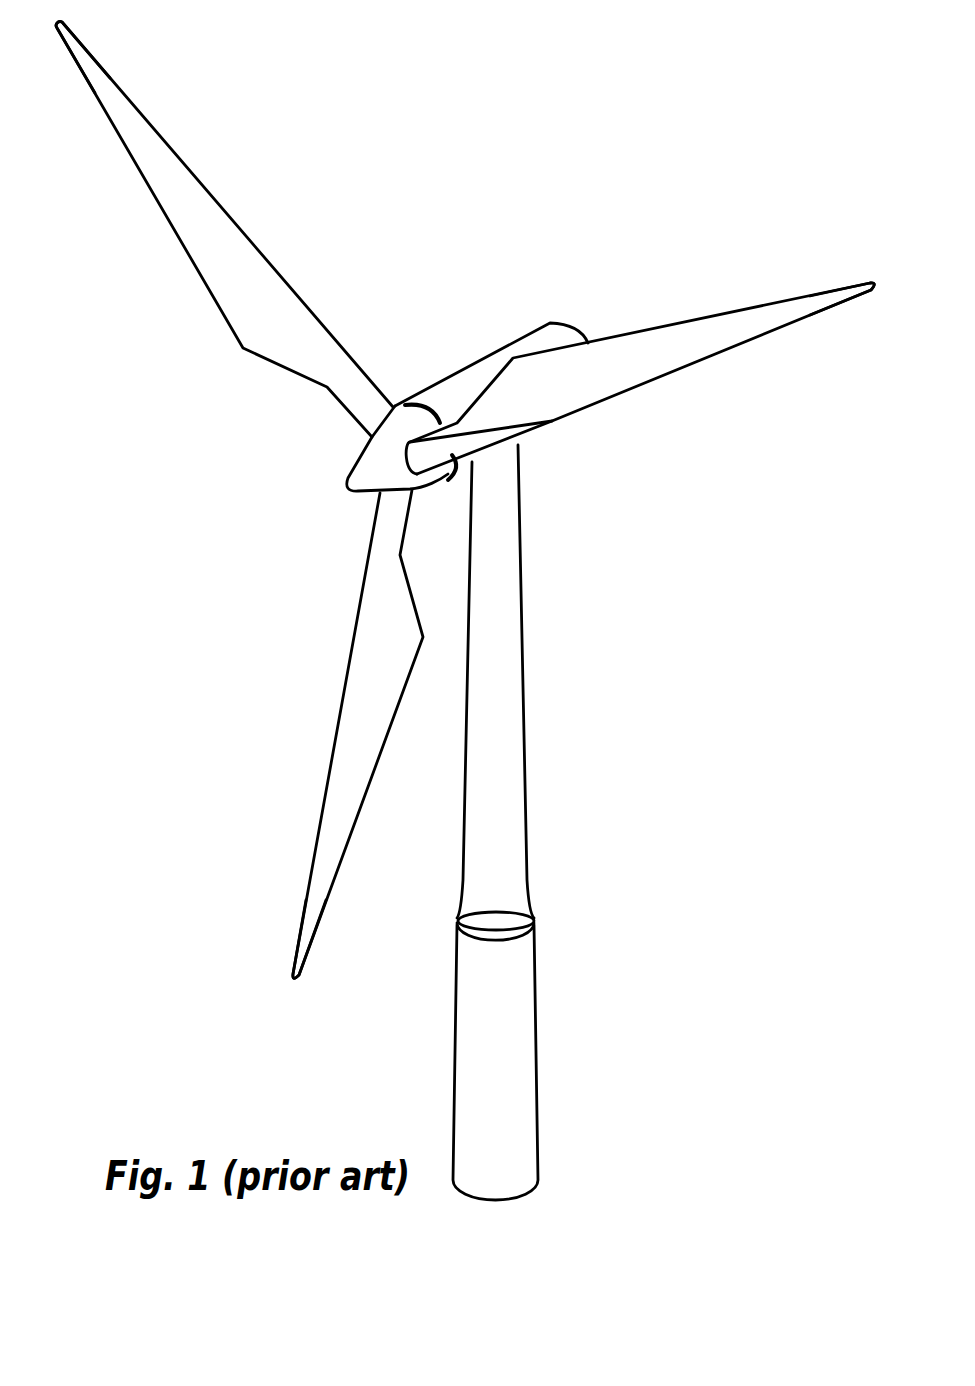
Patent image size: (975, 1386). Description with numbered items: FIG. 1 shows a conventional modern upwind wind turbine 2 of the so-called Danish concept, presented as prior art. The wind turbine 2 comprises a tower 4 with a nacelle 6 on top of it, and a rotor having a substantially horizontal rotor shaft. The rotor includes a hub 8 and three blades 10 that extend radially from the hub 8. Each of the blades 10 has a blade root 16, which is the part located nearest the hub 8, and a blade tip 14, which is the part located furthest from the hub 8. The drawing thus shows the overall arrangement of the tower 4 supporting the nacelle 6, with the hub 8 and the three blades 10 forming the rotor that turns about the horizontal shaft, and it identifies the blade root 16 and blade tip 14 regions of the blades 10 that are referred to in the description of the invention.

The wind turbine 2 is at (632, 758).
The tower 4 is at (513, 682).
The nacelle 6 is at (458, 385).
The hub 8 is at (372, 468).
The blades 10 is at (257, 320).
The blade tip 14 is at (98, 80).
The blade root 16 is at (371, 426).